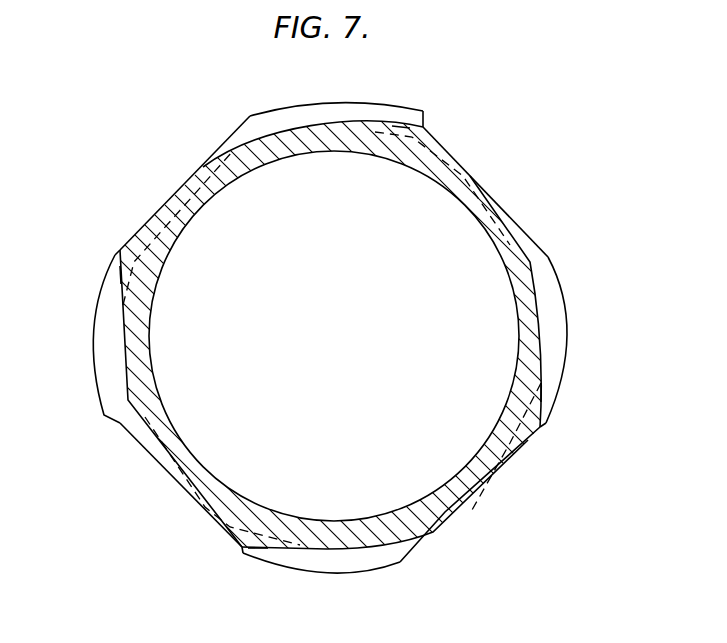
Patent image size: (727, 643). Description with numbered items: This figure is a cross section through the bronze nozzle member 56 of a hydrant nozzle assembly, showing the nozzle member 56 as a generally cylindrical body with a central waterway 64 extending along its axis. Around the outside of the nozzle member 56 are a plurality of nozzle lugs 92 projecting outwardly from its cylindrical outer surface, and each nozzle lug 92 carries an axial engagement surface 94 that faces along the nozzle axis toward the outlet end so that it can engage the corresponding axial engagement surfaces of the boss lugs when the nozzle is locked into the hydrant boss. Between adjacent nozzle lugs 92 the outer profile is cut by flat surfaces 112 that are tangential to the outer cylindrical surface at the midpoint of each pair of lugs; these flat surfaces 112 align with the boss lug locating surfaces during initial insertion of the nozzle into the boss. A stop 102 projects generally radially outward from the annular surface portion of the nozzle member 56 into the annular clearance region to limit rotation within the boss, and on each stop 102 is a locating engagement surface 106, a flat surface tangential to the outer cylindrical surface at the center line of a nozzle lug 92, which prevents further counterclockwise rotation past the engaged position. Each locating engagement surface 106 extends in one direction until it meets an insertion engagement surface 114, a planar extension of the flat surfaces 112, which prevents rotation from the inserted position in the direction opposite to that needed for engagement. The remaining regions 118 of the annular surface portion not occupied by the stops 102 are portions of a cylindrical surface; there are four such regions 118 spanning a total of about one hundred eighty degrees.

The nozzle member 56 is at (508, 151).
The waterway 64 is at (352, 152).
The nozzle lugs 92 is at (340, 104).
The axial engagement surface 94 is at (329, 325).
The stop 102 is at (424, 119).
The locating engagement surface 106 is at (400, 126).
The flat surfaces 112 is at (213, 154).
The insertion engagement surfaces 114 is at (138, 234).
The remaining regions 118 is at (320, 124).